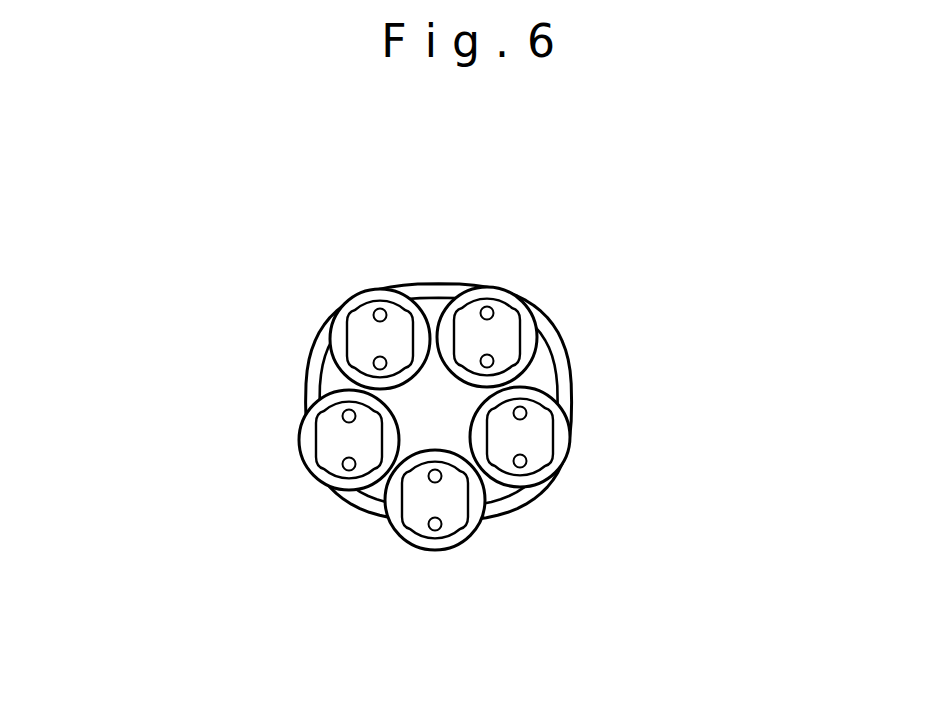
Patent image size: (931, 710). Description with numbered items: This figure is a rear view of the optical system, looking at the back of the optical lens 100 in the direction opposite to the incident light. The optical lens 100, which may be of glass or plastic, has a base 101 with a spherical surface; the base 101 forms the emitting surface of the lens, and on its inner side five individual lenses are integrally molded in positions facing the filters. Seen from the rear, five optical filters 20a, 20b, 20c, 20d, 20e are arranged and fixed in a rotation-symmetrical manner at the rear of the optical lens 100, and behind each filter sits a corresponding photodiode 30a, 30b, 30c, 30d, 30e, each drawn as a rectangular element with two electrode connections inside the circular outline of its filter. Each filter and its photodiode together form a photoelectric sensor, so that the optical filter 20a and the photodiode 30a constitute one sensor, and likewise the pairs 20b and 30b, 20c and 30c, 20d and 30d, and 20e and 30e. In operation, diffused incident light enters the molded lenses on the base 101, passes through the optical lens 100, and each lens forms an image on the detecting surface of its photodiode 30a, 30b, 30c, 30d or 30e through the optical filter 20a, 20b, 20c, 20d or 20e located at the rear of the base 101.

The optical lens 100 is at (430, 284).
The base 101 is at (569, 375).
The optical filter 20a is at (380, 514).
The optical filter 20b is at (305, 457).
The optical filter 20c is at (350, 295).
The optical filter 20d is at (503, 287).
The optical filter 20e is at (574, 438).
The photodiode 30a is at (420, 530).
The photodiode 30b is at (332, 442).
The photodiode 30c is at (353, 330).
The photodiode 30d is at (502, 340).
The photodiode 30e is at (533, 453).